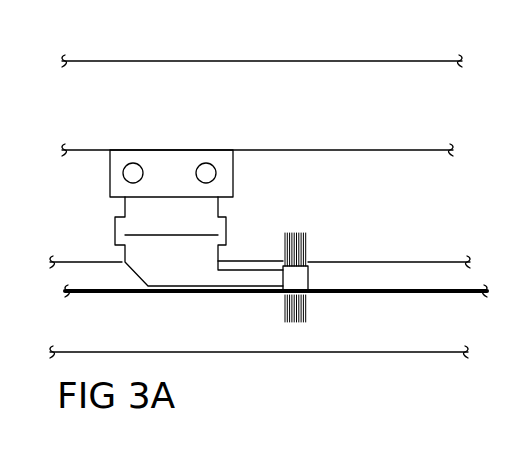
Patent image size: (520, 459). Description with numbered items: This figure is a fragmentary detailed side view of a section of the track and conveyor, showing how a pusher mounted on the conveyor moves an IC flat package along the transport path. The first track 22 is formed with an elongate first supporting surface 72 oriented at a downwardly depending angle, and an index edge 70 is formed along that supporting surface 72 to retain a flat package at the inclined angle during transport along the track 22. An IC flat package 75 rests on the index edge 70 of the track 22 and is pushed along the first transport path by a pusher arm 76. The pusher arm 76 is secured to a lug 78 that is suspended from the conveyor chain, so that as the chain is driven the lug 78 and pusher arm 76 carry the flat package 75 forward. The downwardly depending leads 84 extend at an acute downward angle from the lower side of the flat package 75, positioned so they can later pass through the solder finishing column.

The first track 22 is at (391, 240).
The index edge 70 is at (408, 293).
The first supporting surface 72 is at (217, 331).
The IC flat package 75 is at (306, 268).
The pusher arm 76 is at (181, 272).
The lug 78 is at (233, 173).
The downwardly depending leads 84 is at (308, 307).